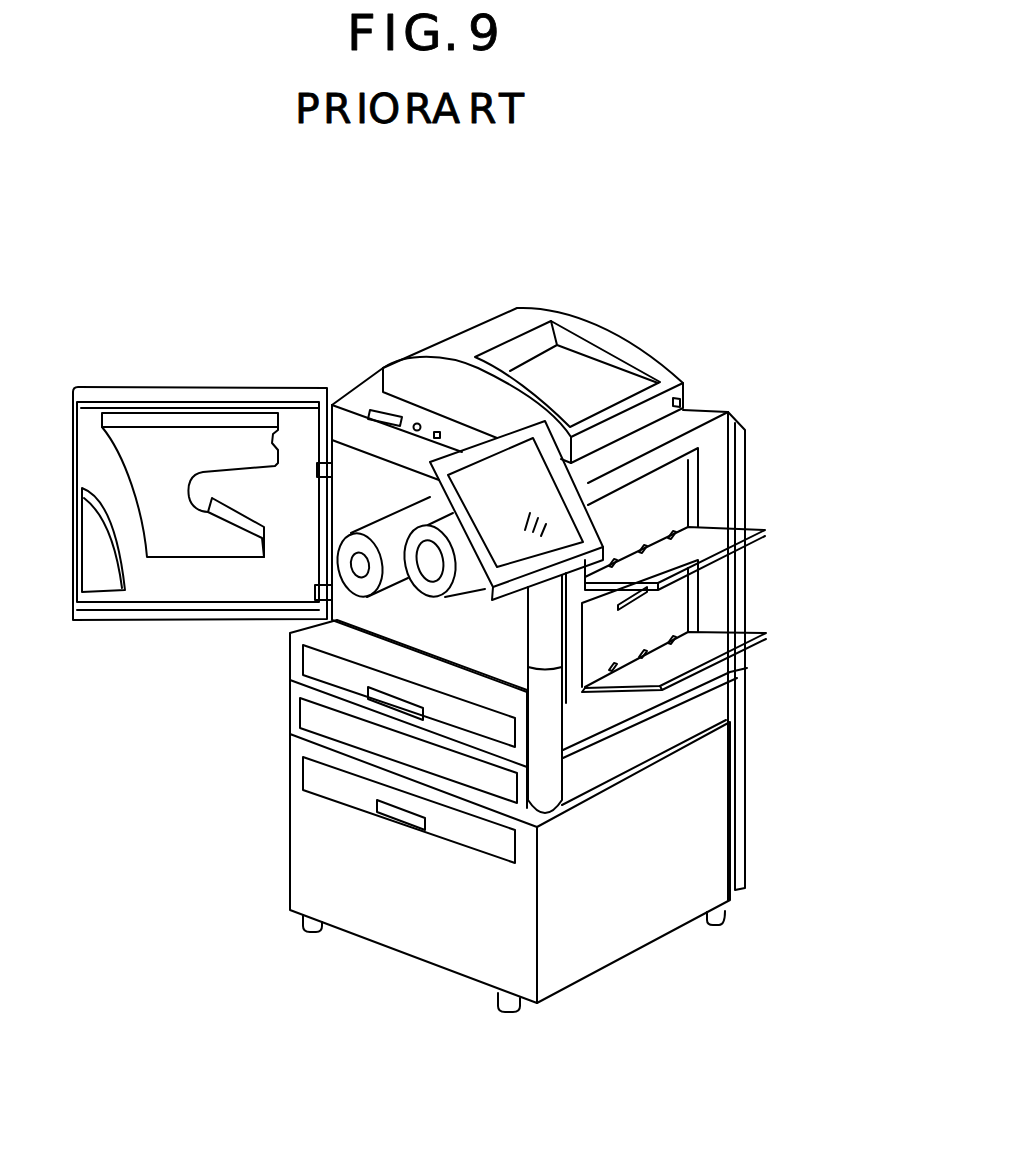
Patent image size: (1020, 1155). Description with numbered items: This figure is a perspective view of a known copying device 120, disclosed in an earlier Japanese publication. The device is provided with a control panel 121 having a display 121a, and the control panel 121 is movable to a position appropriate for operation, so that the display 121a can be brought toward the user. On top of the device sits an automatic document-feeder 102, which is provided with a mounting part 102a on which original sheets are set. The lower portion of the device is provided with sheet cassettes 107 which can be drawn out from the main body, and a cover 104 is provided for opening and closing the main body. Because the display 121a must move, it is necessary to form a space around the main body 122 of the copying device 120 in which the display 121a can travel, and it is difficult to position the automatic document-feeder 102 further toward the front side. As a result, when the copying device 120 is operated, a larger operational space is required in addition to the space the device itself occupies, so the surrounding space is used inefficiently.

The automatic document-feeder 102 is at (512, 310).
The mounting part 102a is at (584, 368).
The cover 104 is at (118, 386).
The sheet cassettes 107 is at (302, 663).
The copying device 120 is at (640, 334).
The control panel 121 is at (357, 399).
The display 121a is at (478, 470).
The main body 122 is at (695, 420).